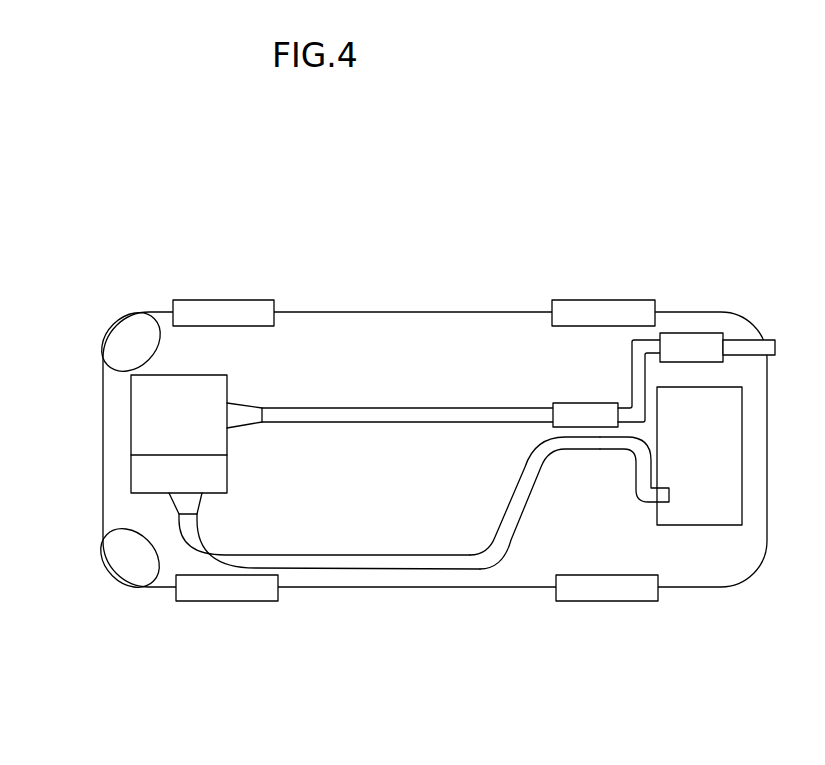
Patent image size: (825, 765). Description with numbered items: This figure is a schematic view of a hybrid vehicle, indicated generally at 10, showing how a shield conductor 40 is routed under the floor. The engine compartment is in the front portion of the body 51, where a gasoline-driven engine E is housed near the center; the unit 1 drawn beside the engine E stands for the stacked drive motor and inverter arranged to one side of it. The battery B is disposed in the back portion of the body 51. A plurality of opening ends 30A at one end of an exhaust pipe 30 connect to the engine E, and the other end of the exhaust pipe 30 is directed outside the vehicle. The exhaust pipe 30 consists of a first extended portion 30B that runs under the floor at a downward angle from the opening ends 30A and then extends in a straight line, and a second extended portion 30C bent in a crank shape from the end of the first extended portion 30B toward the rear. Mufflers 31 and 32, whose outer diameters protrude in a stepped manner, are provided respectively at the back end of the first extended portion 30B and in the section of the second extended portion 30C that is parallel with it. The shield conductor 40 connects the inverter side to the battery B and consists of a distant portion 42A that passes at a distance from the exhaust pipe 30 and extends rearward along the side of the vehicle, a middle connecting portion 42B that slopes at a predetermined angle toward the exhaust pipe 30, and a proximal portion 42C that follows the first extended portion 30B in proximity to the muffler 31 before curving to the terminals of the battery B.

The vehicle wiring system 10 is at (428, 355).
The body 51 is at (425, 312).
The engine unit housing 1 is at (131, 407).
The engine E is at (131, 477).
The battery B is at (742, 435).
The exhaust pipe 30 is at (483, 326).
The opening ends 30A is at (227, 410).
The first extended portion 30B is at (467, 408).
The second extended portion 30C is at (752, 340).
The muffler 31 is at (586, 403).
The muffler 32 is at (690, 333).
The shield conductor 40 is at (424, 572).
The distant portion 42A is at (342, 568).
The middle connecting portion 42B is at (518, 512).
The proximal portion 42C is at (596, 449).